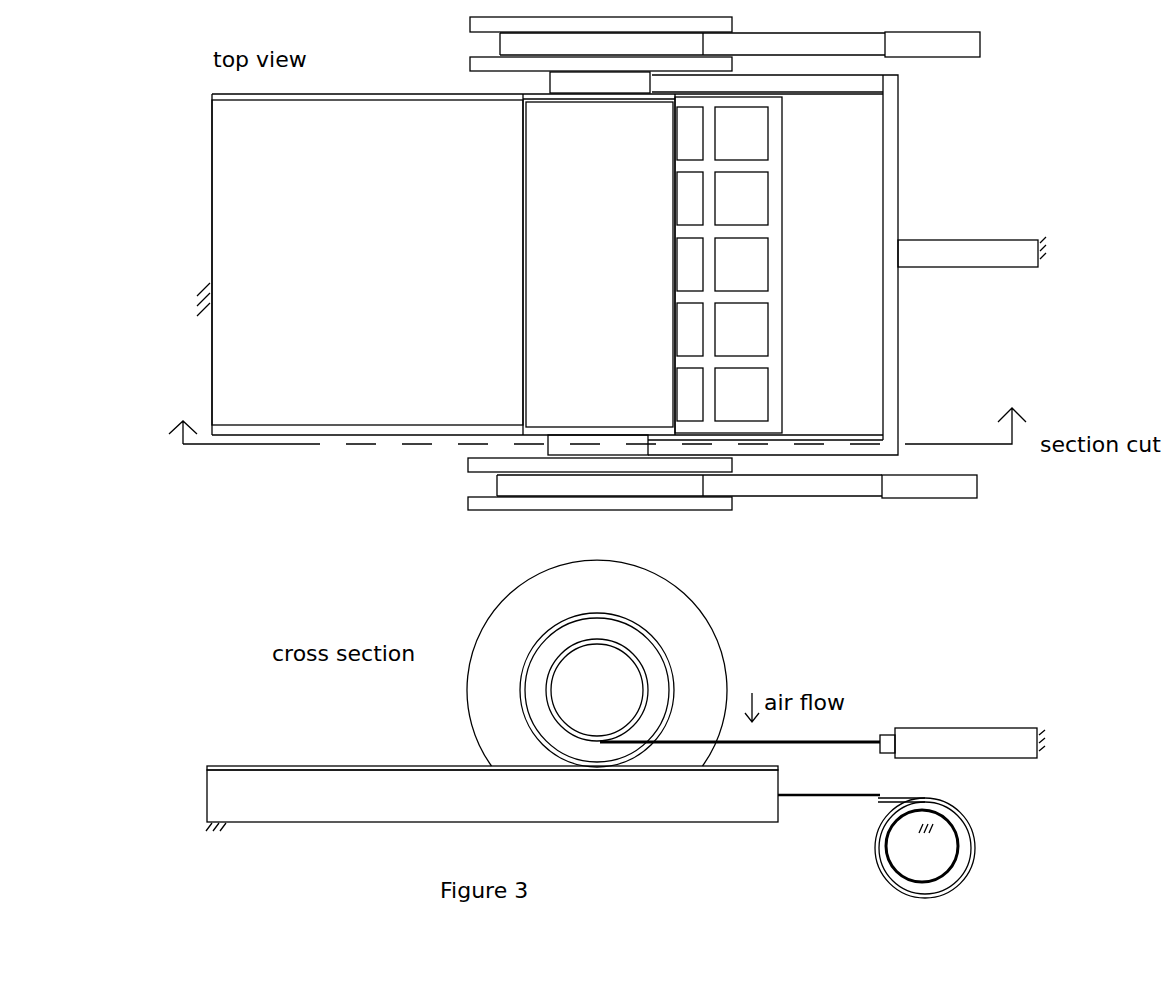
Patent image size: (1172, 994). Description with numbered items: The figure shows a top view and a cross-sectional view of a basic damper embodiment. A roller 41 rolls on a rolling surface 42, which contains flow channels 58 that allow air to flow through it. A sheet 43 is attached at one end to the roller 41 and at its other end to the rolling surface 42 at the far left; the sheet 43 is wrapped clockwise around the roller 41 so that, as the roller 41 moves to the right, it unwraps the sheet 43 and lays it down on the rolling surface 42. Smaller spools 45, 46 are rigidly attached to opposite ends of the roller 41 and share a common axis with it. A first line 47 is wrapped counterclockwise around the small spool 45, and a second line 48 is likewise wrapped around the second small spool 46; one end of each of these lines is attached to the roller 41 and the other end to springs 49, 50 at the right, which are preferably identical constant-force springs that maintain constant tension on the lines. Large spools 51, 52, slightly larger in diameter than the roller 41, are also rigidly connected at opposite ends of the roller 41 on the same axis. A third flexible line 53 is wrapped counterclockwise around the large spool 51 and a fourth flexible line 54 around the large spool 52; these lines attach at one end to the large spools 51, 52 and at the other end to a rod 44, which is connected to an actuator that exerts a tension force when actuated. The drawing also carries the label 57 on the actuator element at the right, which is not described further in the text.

The roller 41 is at (533, 100).
The rolling surface 42 is at (358, 98).
The sheet 43 is at (830, 817).
The rod 44 is at (892, 367).
The small spool 45 is at (552, 72).
The second small spool 46 is at (548, 457).
The first line 47 is at (802, 83).
The second line 48 is at (548, 457).
The spring 49 is at (967, 43).
The spring 50 is at (968, 490).
The large spool 51 is at (500, 33).
The large spool 52 is at (497, 475).
The third flexible line 53 is at (510, 43).
The fourth flexible line 54 is at (760, 485).
The actuator / cylinder 57 is at (948, 249).
The flow channels 58 is at (750, 140).